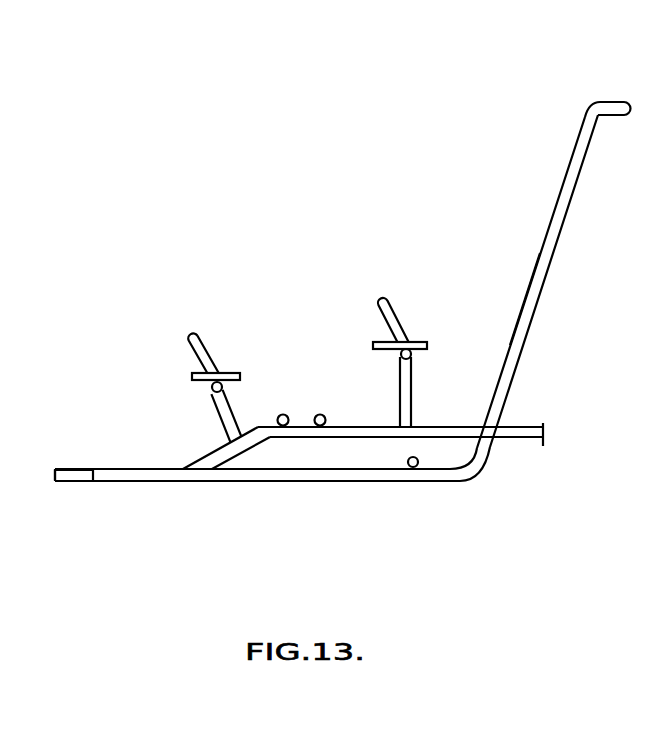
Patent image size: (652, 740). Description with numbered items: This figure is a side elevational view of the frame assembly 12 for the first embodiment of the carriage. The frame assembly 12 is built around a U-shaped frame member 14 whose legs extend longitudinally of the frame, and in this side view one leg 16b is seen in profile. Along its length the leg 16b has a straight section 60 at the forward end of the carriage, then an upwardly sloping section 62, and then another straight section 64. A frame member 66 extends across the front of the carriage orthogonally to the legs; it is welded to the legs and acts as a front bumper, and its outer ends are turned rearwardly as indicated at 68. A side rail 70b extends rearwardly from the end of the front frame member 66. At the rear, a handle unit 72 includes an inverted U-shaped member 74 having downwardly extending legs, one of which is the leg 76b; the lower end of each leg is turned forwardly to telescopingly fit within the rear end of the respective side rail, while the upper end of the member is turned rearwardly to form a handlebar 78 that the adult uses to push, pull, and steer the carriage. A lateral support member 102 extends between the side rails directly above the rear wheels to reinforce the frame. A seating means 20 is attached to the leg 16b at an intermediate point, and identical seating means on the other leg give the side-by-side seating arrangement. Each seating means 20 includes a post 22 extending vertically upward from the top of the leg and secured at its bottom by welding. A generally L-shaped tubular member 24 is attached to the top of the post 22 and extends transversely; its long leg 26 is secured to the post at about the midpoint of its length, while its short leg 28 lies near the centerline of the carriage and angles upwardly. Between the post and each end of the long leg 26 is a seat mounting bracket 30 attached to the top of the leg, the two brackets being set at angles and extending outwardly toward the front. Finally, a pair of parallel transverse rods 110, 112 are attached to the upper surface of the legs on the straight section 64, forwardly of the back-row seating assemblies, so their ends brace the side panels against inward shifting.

The frame assembly 12 is at (430, 100).
The U-shaped frame member 14 is at (525, 393).
The leg 16b is at (458, 427).
The seating means 20 is at (183, 357).
The post 22 is at (217, 416).
The tubular member 24 is at (288, 312).
The long leg 26 is at (211, 385).
The short leg 28 is at (203, 348).
The seat mounting bracket 30 is at (242, 377).
The straight section 60 is at (146, 469).
The upwardly sloping section 62 is at (250, 440).
The straight section 64 is at (420, 438).
The frame member 66 is at (40, 470).
The turned outer end 68 is at (75, 482).
The side rail 70b is at (358, 482).
The handle unit 72 is at (613, 99).
The inverted U-shaped member 74 is at (587, 110).
The leg 76b is at (548, 280).
The handlebar 78 is at (633, 116).
The lateral support member 102 is at (419, 460).
The rod 110 is at (284, 414).
The rod 112 is at (331, 393).